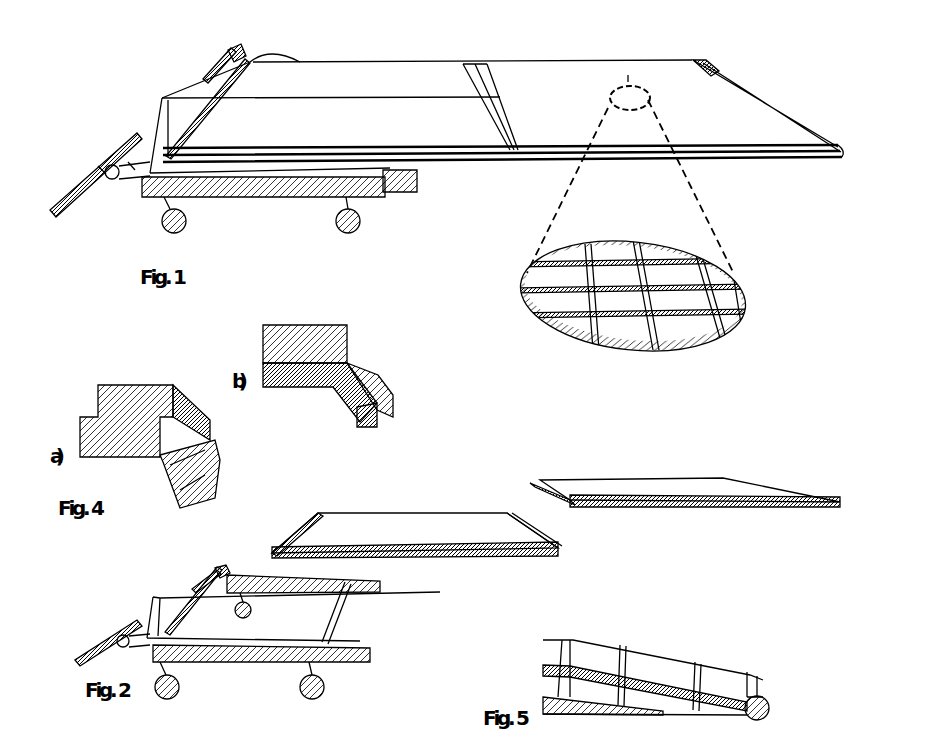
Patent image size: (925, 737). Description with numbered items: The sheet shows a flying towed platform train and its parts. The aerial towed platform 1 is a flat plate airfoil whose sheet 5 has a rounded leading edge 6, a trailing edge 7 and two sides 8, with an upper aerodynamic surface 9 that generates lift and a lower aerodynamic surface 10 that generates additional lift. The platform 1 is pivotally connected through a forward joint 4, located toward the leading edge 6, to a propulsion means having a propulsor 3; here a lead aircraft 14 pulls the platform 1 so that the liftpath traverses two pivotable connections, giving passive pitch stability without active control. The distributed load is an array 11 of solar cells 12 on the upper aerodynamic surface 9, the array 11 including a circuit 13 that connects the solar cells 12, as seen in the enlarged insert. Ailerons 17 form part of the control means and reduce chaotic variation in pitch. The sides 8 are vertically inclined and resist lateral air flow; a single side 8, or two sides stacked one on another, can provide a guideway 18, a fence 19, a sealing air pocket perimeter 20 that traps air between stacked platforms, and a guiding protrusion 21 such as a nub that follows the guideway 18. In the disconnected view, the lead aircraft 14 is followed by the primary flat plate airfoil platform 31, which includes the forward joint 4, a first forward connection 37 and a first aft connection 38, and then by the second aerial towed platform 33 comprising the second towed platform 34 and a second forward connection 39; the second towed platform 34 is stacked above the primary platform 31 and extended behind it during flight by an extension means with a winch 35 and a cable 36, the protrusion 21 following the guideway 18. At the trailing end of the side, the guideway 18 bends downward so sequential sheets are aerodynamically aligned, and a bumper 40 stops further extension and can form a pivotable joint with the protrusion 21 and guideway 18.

In FIG. 1, the aerial towed platform 1 is at (374, 48).
In FIG. 1, the propulsor 3 is at (122, 178).
In FIG. 1, the forward joint 4 is at (772, 91).
In FIG. 1, the sheet 5 is at (630, 179).
In FIG. 1, the rounded leading edge 6 is at (490, 80).
In FIG. 1, the trailing edge 7 is at (730, 87).
In FIG. 1, the sides 8 is at (580, 62).
In FIG. 1, the upper aerodynamic surface 9 is at (628, 75).
In FIG. 4, the upper aerodynamic surface 9 is at (138, 382).
In FIG. 1, the lower aerodynamic surface 10 is at (708, 348).
In FIG. 4, the lower aerodynamic surface 10 is at (287, 378).
In FIG. 1, the array 11 is at (455, 277).
In FIG. 1, the solar cells 12 is at (612, 250).
In FIG. 1, the circuit 13 is at (526, 300).
In FIG. 1, the lead aircraft 14 is at (227, 208).
In FIG. 1, the ailerons 17 is at (398, 195).
In FIG. 1, the guideway 18 is at (772, 148).
In FIG. 4, the guideway 18 is at (368, 358).
In FIG. 4, the fence 19 is at (319, 416).
In FIG. 4, the sealing air pocket perimeter 20 is at (360, 427).
In FIG. 4, the guiding protrusion 21 is at (175, 503).
In FIG. 2, the primary flat plate airfoil platform 31 is at (470, 565).
In FIG. 2, the second aerial towed platform 33 is at (333, 628).
In FIG. 2, the second towed platform 34 is at (707, 524).
In FIG. 1, the winch 35 is at (178, 98).
In FIG. 1, the cable 36 is at (329, 98).
In FIG. 2, the cable 36 is at (393, 598).
In FIG. 2, the first forward connection 37 is at (268, 562).
In FIG. 2, the first aft connection 38 is at (522, 517).
In FIG. 2, the second forward connection 39 is at (528, 482).
In FIG. 5, the bumper 40 is at (771, 707).